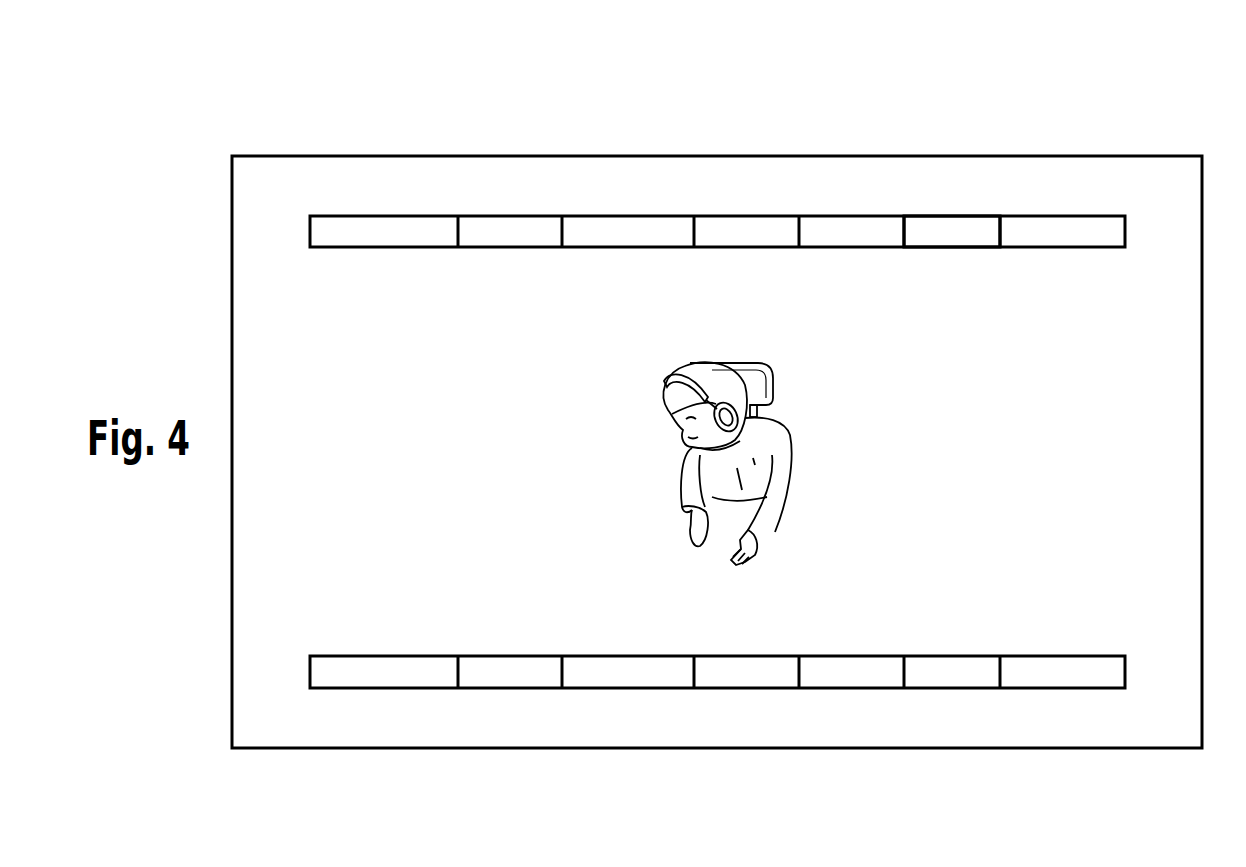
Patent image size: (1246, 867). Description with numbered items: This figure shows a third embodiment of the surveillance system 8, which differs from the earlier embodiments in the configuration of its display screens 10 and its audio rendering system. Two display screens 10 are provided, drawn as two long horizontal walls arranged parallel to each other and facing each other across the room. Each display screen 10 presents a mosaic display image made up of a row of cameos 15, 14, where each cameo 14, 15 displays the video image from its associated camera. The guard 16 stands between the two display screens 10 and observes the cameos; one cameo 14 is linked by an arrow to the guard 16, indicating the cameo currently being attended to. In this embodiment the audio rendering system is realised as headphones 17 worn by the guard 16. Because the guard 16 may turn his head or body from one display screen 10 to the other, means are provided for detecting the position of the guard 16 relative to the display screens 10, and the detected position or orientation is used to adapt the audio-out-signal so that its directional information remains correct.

The surveillance system 8 is at (1137, 80).
The display screen 10 is at (671, 216).
The cameo 15 is at (377, 232).
The cameo 14 is at (790, 352).
The guard 16 is at (722, 380).
The headphones 17 is at (688, 378).